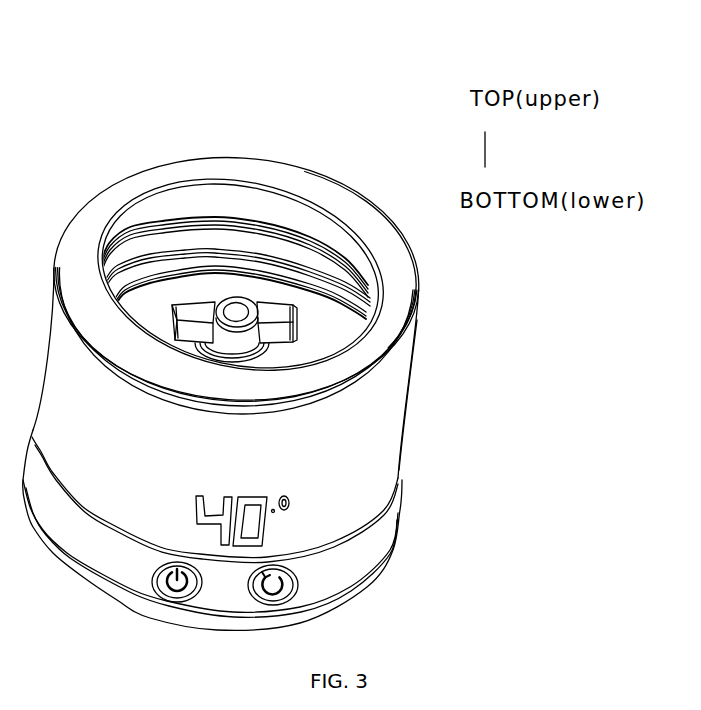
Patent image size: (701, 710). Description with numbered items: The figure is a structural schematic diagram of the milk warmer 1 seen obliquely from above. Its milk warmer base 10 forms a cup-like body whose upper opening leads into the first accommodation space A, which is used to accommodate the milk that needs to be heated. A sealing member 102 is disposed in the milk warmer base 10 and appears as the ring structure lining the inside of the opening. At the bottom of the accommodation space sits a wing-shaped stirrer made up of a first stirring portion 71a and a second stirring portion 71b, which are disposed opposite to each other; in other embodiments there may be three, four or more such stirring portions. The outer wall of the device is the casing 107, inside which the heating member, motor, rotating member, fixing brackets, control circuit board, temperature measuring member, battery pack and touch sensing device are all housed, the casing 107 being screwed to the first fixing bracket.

The milk warmer 1 is at (262, 50).
The milk warmer base 10 is at (412, 298).
The casing 107 is at (398, 432).
The sealing member 102 is at (132, 290).
The first accommodation space A is at (348, 247).
The first stirring portion 71a is at (186, 307).
The second stirring portion 71b is at (273, 310).